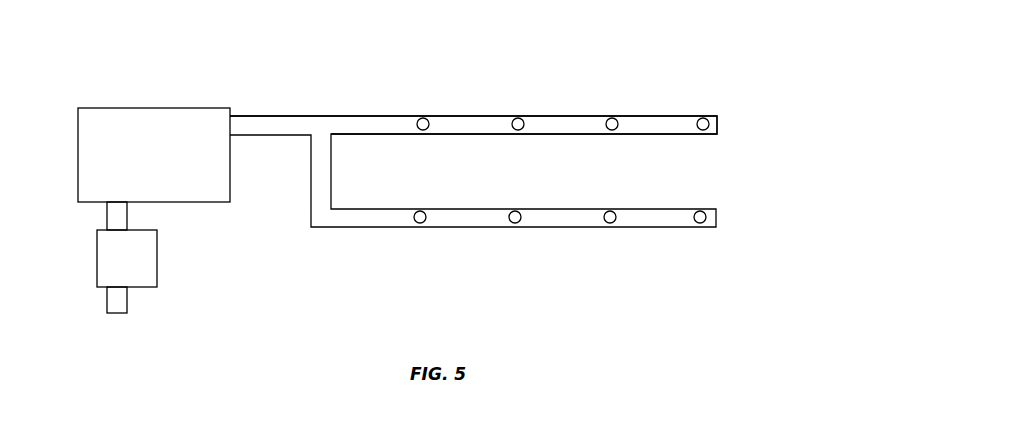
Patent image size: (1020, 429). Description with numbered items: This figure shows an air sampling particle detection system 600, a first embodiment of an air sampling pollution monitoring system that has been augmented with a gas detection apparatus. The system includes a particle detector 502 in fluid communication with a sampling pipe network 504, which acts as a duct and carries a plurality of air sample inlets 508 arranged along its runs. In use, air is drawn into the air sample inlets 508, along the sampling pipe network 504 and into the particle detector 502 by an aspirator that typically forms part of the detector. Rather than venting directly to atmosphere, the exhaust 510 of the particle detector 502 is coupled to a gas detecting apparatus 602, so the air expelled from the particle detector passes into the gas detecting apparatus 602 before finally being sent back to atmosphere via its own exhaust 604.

The particle detector 502 is at (168, 108).
The sampling pipe network 504 is at (357, 116).
The air sample inlets 508 is at (421, 130).
The exhaust 510 is at (127, 209).
The air sampling particle detection system 600 is at (587, 90).
The gas detecting apparatus 602 is at (157, 258).
The exhaust 604 is at (135, 304).